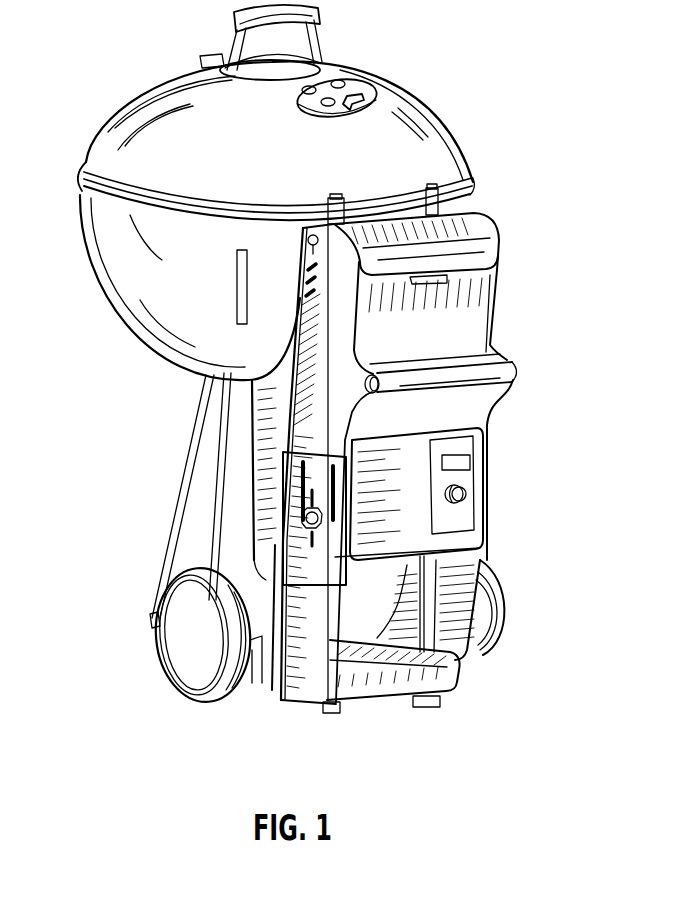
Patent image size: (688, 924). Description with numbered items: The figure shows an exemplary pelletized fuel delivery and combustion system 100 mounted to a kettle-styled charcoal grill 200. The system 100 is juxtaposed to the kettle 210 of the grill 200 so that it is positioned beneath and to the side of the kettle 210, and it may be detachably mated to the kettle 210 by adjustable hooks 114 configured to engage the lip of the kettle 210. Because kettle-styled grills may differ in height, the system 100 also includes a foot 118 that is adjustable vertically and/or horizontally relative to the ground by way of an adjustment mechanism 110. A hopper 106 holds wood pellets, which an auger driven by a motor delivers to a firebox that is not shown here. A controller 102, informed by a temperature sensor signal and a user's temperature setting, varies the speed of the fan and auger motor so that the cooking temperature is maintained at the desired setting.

The kettle-styled charcoal grill 200 is at (268, 192).
The kettle 210 is at (150, 275).
The adjustable hooks 114 is at (337, 197).
The pelletized fuel delivery and combustion system 100 is at (366, 498).
The hopper 106 is at (463, 334).
The controller 102 is at (463, 512).
The adjustment mechanism 110 is at (302, 516).
The foot 118 is at (315, 697).